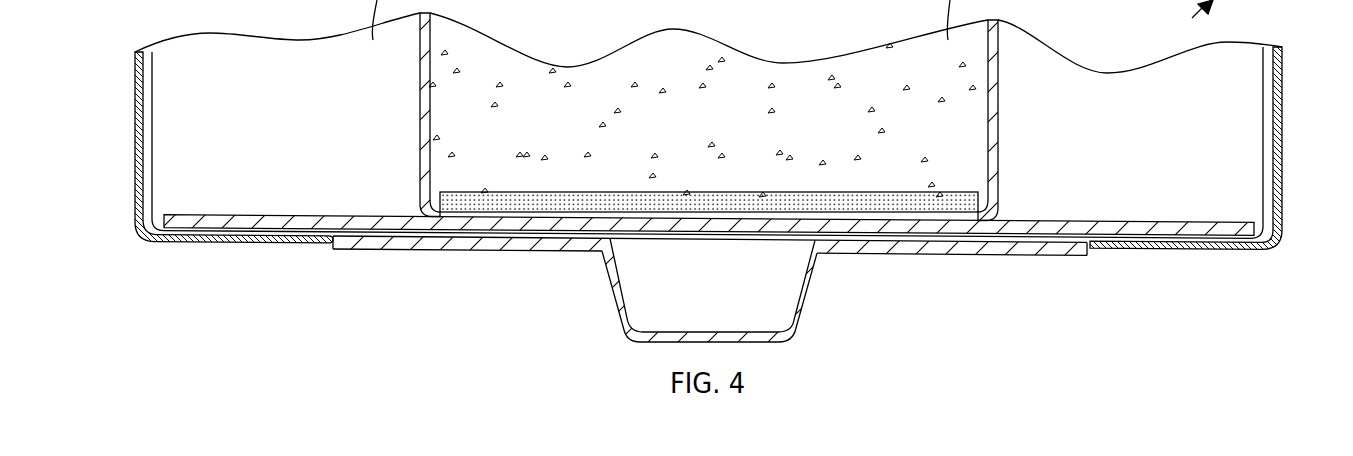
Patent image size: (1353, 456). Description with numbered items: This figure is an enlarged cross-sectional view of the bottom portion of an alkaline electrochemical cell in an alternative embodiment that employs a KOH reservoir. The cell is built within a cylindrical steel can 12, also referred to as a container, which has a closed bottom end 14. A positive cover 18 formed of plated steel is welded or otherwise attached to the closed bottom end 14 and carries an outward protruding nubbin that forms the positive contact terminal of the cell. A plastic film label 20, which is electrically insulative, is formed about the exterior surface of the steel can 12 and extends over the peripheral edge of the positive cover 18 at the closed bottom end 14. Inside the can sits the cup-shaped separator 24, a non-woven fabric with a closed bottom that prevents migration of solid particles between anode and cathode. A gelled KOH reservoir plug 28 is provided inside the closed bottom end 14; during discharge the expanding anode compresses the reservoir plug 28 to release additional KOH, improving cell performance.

The cylindrical steel can 12 is at (1279, 116).
The closed bottom end 14 is at (867, 229).
The positive cover 18 is at (763, 345).
The plastic film label 20 is at (135, 153).
The separator 24 is at (995, 178).
The gelled KOH reservoir plug 28 is at (948, 207).